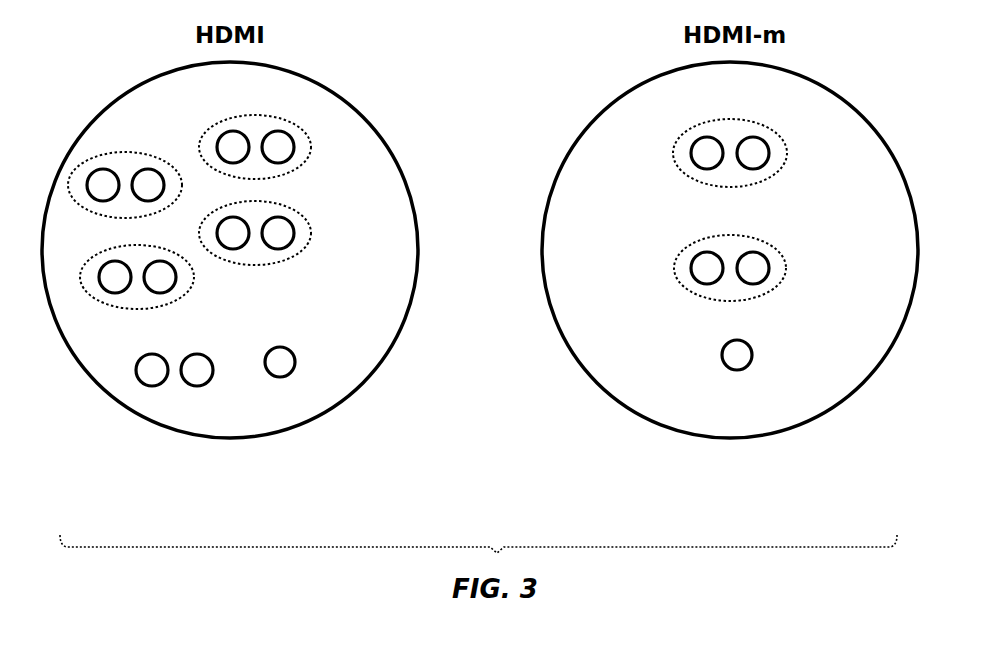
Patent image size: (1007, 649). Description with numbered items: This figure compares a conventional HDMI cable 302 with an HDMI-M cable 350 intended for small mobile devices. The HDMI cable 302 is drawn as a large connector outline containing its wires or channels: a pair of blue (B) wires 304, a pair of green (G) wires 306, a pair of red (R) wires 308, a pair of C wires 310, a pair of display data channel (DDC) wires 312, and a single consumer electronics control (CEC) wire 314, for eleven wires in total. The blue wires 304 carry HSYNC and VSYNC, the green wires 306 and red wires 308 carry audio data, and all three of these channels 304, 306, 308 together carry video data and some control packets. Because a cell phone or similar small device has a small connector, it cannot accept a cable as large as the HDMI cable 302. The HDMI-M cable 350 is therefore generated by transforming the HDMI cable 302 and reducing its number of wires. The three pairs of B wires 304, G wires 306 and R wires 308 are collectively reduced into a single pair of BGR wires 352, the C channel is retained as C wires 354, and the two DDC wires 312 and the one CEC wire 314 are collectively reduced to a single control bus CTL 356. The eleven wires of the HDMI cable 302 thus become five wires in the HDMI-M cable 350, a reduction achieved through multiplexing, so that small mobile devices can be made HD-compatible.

The HDMI cable 302 is at (308, 82).
The blue (B) wires 304 is at (154, 158).
The green (G) wires 306 is at (136, 310).
The red (R) wires 308 is at (308, 243).
The C wires 310 is at (308, 157).
The display data channel (DDC) wires 312 is at (213, 375).
The consumer electronics control (CEC) wire 314 is at (295, 362).
The HDMI-M cable 350 is at (847, 102).
The BGR wires 352 is at (673, 268).
The C wires 354 is at (673, 157).
The control bus CTL 356 is at (722, 353).